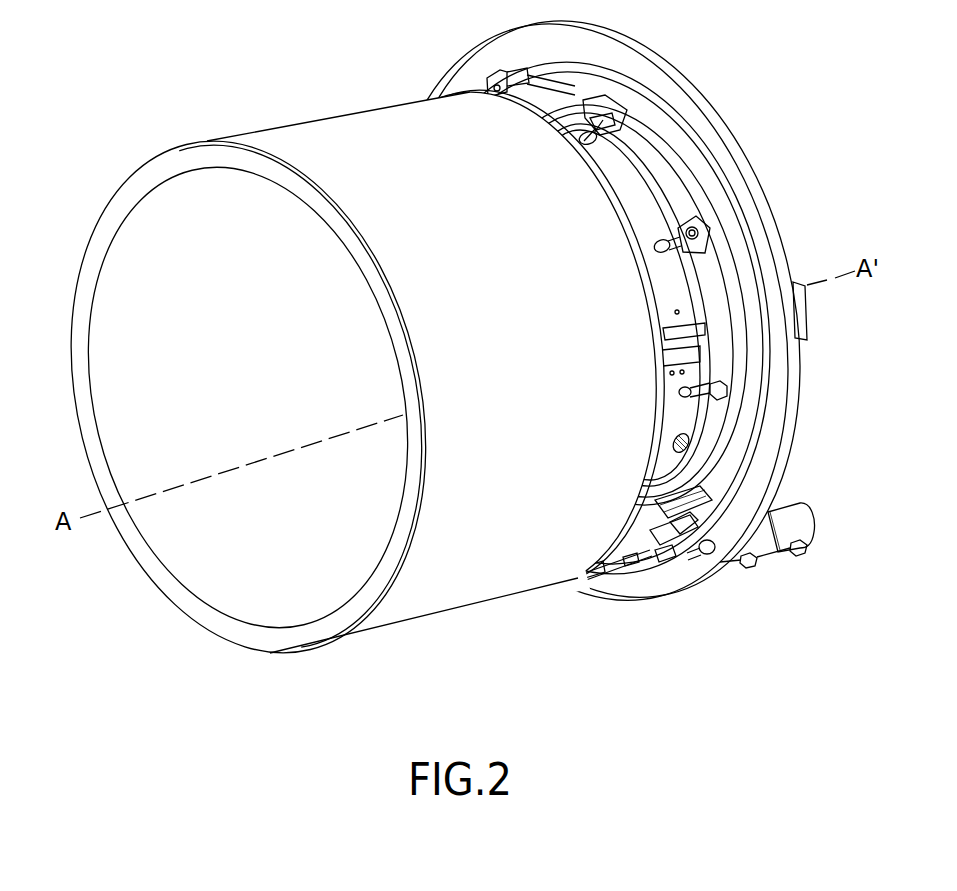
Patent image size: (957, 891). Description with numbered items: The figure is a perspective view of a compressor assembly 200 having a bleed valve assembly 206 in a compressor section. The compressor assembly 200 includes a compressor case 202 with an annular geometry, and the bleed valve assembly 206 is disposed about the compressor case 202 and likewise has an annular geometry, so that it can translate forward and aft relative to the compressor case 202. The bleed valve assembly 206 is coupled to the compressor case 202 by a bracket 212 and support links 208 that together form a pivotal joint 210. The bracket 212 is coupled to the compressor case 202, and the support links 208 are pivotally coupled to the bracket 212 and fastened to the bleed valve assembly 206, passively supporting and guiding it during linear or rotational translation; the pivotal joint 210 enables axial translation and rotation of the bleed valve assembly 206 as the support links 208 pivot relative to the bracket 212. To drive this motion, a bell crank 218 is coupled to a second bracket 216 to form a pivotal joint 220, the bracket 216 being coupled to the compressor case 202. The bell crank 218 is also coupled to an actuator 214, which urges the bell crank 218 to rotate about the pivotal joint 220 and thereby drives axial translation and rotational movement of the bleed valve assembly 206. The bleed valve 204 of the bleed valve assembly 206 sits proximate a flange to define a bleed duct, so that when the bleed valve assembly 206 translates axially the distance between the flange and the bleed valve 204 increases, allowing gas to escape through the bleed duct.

The compressor assembly 200 is at (154, 88).
The compressor case 202 is at (440, 117).
The bleed valve 204 is at (730, 173).
The bleed valve assembly 206 is at (718, 212).
The support links 208 is at (703, 222).
The pivotal joint 210 is at (742, 248).
The bracket 212 is at (658, 238).
The actuator 214 is at (795, 508).
The bracket 216 is at (700, 490).
The bell crank 218 is at (673, 558).
The pivotal joint 220 is at (700, 526).